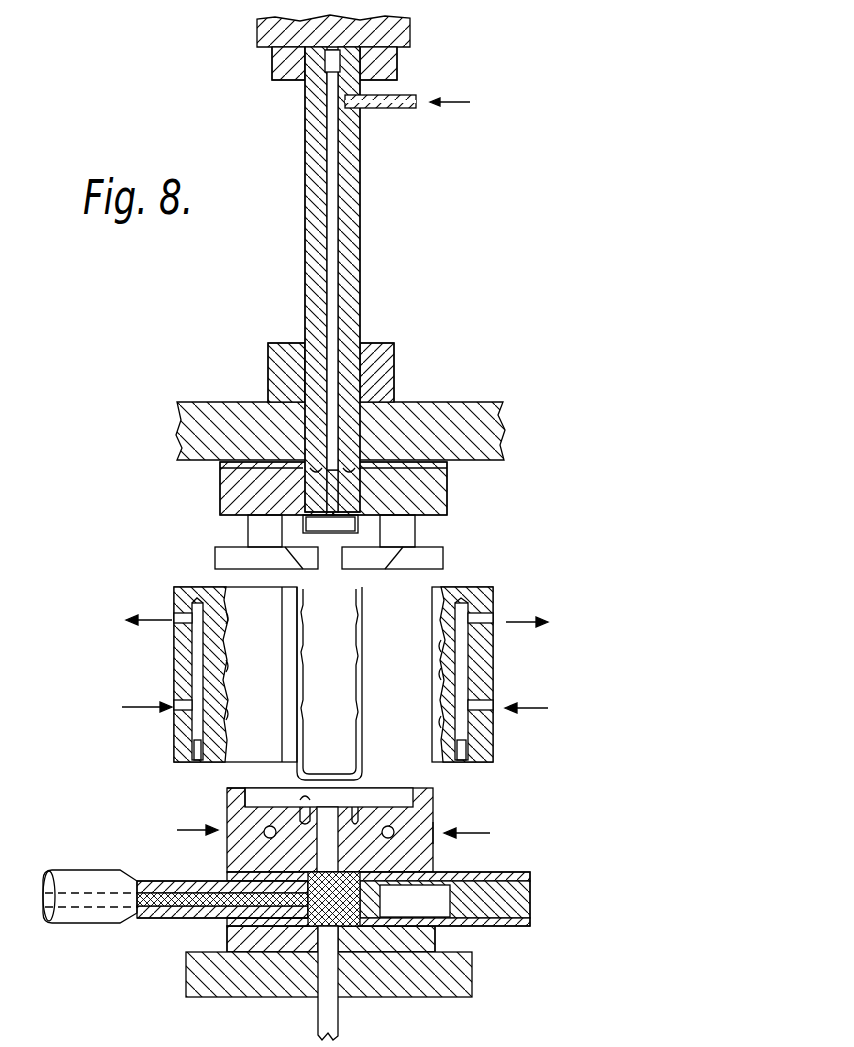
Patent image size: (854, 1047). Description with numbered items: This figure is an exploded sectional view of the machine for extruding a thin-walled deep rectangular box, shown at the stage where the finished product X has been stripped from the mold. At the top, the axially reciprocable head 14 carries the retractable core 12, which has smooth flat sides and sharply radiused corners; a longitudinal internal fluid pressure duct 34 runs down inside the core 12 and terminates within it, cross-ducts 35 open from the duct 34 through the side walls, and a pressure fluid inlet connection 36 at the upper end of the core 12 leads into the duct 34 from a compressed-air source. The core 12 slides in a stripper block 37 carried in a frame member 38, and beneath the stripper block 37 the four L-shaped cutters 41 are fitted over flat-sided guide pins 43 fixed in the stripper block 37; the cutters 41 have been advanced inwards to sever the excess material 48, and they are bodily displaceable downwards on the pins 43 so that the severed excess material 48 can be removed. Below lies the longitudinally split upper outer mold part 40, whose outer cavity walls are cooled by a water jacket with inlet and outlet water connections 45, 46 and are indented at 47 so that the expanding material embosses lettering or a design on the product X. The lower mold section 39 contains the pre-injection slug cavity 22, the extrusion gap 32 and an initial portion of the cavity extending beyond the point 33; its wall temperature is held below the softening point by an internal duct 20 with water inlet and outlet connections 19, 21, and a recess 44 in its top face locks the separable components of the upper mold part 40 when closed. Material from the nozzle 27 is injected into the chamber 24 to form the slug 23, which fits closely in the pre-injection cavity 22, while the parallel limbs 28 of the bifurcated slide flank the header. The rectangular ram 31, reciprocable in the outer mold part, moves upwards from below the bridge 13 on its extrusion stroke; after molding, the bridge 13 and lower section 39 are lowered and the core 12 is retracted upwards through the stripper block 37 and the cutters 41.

The axially reciprocable head 14 is at (397, 33).
The pressure fluid inlet connection 36 is at (405, 110).
The core 12 is at (350, 222).
The longitudinal internal fluid pressure duct 34 is at (333, 306).
The frame member 38 is at (447, 413).
The cross-duct 35 is at (317, 467).
The stripper block 37 is at (433, 506).
The guide pin 43 is at (256, 531).
The excess material 48 is at (315, 527).
The cutter 41 is at (228, 559).
The upper outer mold part 40 is at (182, 669).
The outlet water connection 46 is at (330, 679).
The inlet water connection 45 is at (332, 724).
The indentation 47 is at (227, 618).
The finished product X is at (362, 666).
The extrusion gap 32 is at (340, 820).
The point 33 is at (305, 800).
The internal duct 20 is at (266, 829).
The lower section of outer mold part 39 is at (235, 812).
The water inlet connection 19 is at (286, 870).
The water outlet connection 21 is at (475, 835).
The recess 44 is at (410, 790).
The pre-injection slug cavity 22 is at (240, 874).
The nozzle 27 is at (70, 882).
The limb of bifurcated slide 28 is at (530, 890).
The chamber 24 is at (317, 919).
The slug 23 is at (345, 923).
The bridge 13 is at (203, 984).
The ram 31 is at (320, 1026).